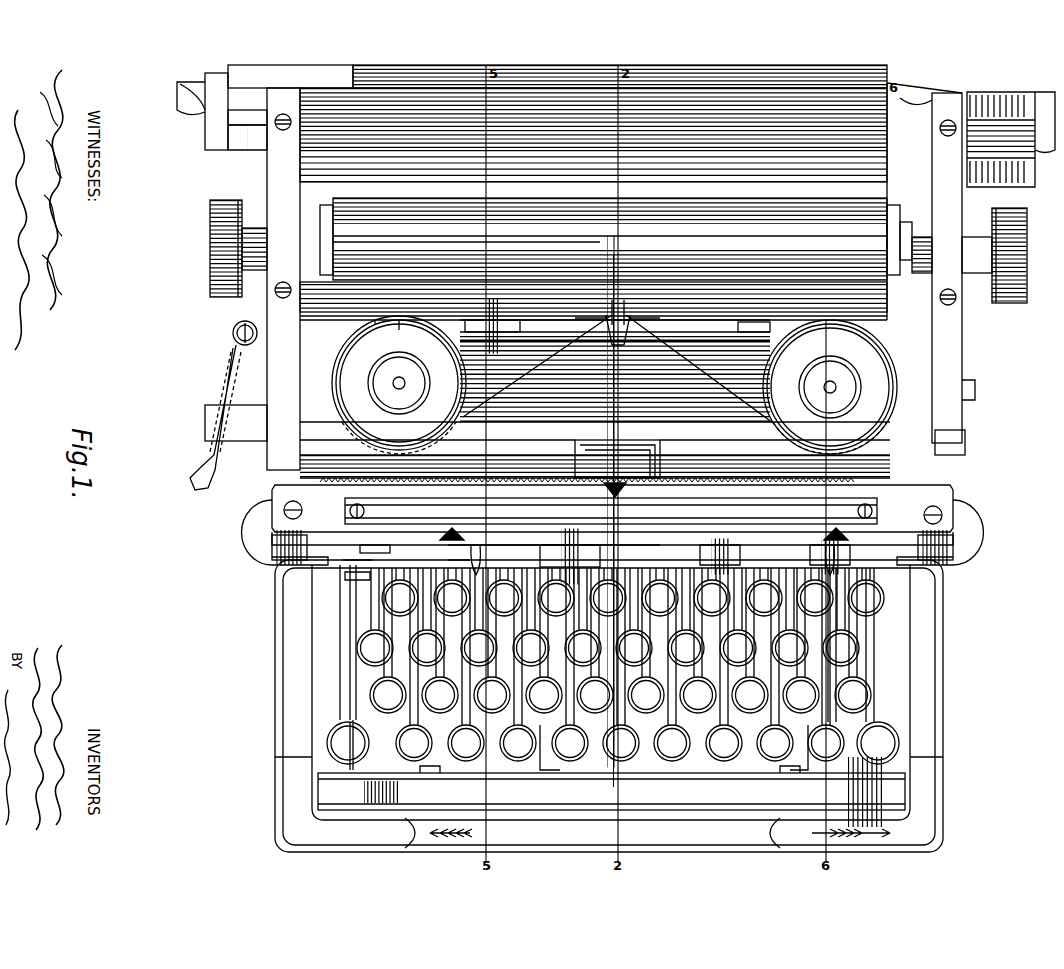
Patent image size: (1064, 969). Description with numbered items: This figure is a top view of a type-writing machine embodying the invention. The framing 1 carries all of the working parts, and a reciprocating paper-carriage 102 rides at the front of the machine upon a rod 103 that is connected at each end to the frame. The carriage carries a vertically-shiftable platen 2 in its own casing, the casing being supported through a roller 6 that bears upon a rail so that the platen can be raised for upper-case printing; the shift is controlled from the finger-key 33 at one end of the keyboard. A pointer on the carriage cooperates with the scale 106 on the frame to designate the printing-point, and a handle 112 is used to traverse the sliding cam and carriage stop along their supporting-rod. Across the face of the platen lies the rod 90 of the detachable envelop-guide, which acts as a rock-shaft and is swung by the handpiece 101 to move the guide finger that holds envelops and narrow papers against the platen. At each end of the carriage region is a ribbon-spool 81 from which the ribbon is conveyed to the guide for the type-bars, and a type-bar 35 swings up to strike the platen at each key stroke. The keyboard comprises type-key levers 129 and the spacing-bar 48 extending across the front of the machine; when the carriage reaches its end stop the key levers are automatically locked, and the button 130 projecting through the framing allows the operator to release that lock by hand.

The framing 1 is at (208, 145).
The platen 2 is at (632, 206).
The roller 6 is at (495, 415).
The finger-key 33 is at (326, 743).
The type-bar 35 is at (615, 381).
The spacing-bar 48 is at (611, 788).
The ribbon-spool 81 is at (614, 385).
The rod 90 is at (470, 312).
The handpiece 101 is at (620, 270).
The paper-carriage 102 is at (595, 273).
The rod 103 is at (325, 470).
The scale 106 is at (880, 507).
The handle 112 is at (482, 551).
The type-key levers 129 is at (395, 668).
The button 130 is at (352, 580).